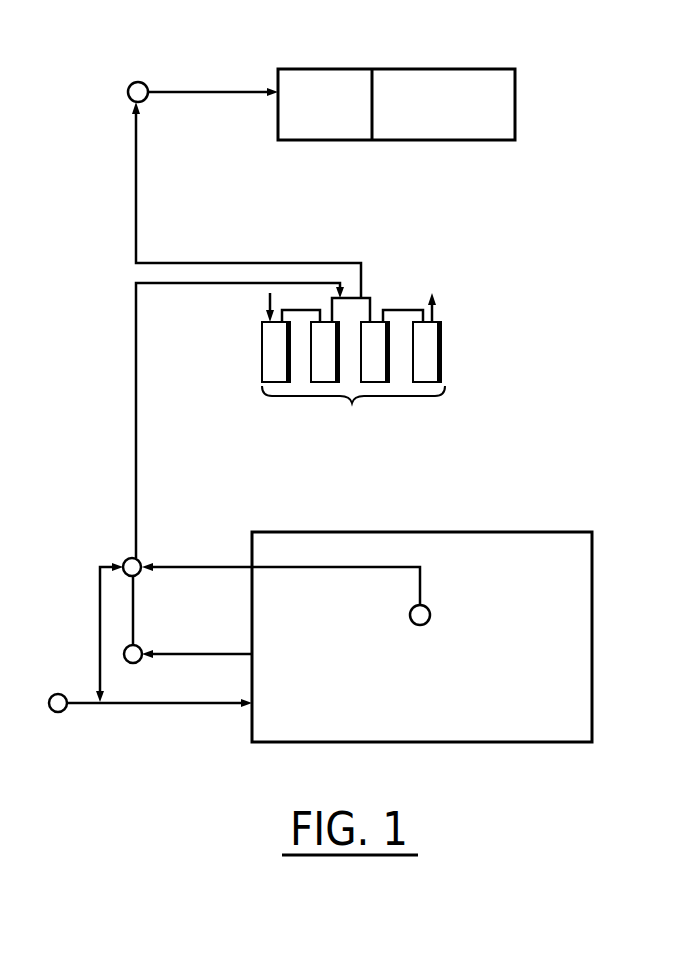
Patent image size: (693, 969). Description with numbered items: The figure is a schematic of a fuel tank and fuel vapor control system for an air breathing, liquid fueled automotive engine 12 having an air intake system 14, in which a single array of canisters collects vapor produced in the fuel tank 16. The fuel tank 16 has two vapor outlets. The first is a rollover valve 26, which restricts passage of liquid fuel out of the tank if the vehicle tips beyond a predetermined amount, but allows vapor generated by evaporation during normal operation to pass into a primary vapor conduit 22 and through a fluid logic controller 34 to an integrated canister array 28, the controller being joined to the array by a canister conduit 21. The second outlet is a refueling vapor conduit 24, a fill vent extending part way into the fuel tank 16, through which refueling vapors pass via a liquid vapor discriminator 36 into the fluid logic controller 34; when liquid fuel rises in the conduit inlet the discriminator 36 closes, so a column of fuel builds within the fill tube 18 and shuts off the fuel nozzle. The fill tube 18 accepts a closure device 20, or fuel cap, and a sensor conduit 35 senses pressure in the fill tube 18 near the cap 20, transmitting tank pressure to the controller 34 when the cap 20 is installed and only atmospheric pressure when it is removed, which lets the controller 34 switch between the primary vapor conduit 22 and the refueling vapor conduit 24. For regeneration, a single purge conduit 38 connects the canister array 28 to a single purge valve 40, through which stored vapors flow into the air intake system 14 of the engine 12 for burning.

The engine 12 is at (474, 60).
The air intake system 14 is at (333, 68).
The fuel tank 16 is at (428, 528).
The fill tube 18 is at (168, 708).
The closure device 20 is at (63, 712).
The canister conduit 21 is at (133, 380).
The primary vapor conduit 22 is at (192, 565).
The refueling vapor conduit 24 is at (133, 618).
The rollover valve 26 is at (432, 608).
The integrated canister array 28 is at (443, 345).
The fluid logic controller 34 is at (125, 560).
The sensor conduit 35 is at (100, 625).
The liquid vapor discriminator 36 is at (138, 663).
The purge conduit 38 is at (135, 155).
The purge valve 40 is at (131, 83).